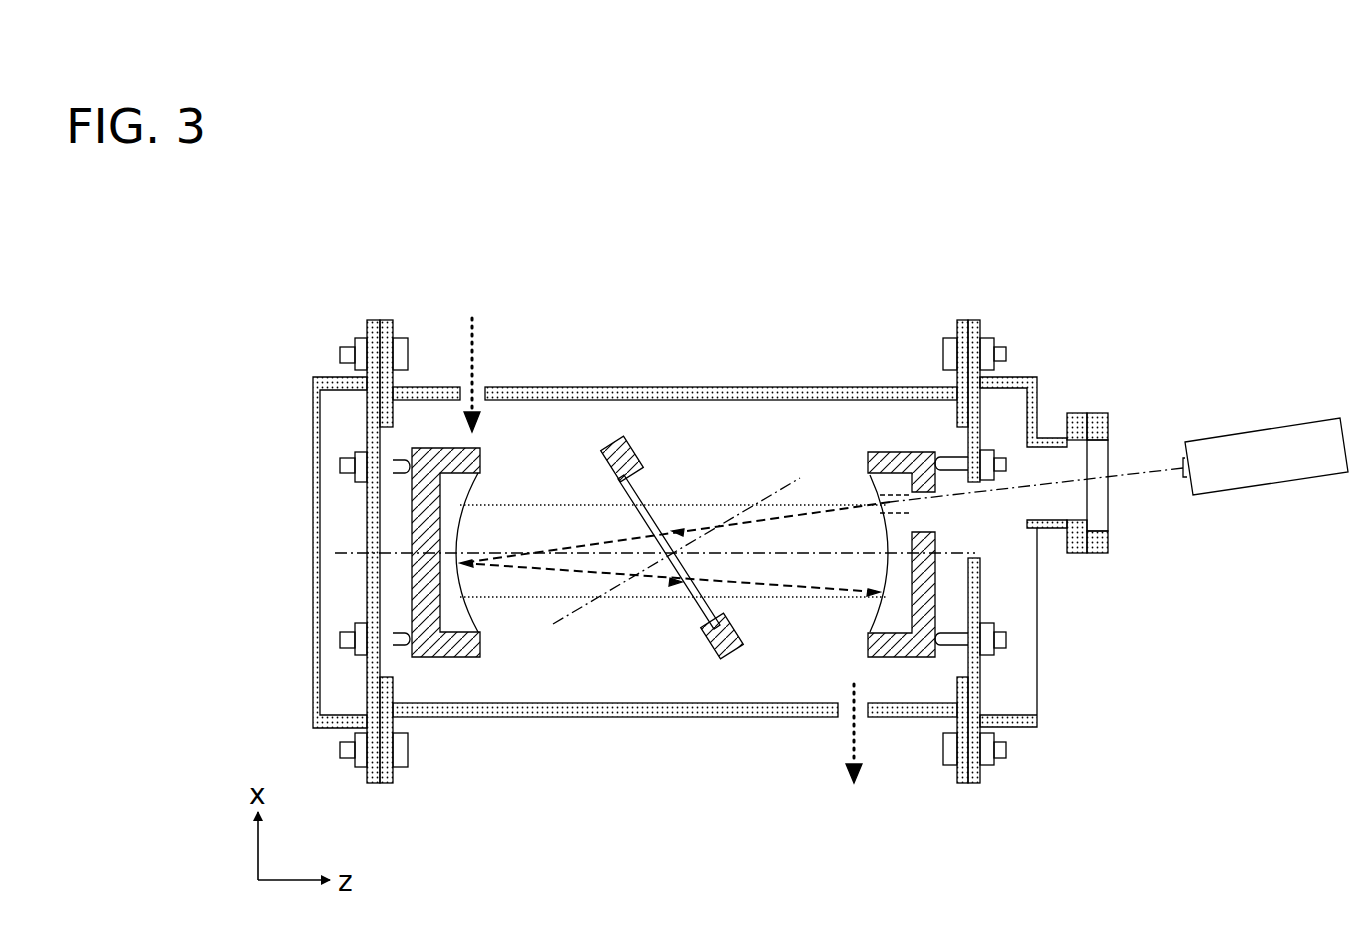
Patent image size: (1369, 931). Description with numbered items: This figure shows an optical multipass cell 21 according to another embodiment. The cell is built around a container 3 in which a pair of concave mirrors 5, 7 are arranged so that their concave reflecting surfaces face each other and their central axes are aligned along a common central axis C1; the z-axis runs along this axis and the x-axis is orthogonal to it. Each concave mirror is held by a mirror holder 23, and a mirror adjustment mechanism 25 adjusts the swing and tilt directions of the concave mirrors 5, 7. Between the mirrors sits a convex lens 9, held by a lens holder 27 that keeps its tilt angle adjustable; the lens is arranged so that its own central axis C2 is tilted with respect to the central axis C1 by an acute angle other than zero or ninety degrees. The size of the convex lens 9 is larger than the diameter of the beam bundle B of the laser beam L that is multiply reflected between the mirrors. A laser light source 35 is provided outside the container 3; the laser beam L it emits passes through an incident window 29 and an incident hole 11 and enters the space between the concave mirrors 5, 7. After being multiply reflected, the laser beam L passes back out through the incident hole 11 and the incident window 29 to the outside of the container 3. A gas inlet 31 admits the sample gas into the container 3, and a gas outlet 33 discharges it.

The optical multipass cell 21 is at (328, 271).
The container 3 is at (895, 387).
The mirror adjustment mechanism 25 is at (400, 643).
The mirror holder 23 is at (453, 658).
The concave mirror 5 is at (475, 618).
The concave mirror 7 is at (875, 617).
The incident hole 11 is at (912, 505).
The convex lens 9 is at (645, 500).
The lens holder 27 is at (612, 442).
The beam bundle B is at (515, 505).
The central axis of the concave mirrors C1 is at (843, 550).
The central axis of the convex lens C2 is at (778, 488).
The laser beam L is at (1130, 470).
The incident window 29 is at (1108, 498).
The laser light source 35 is at (1268, 486).
The gas inlet 31 is at (463, 392).
The gas outlet 33 is at (847, 718).